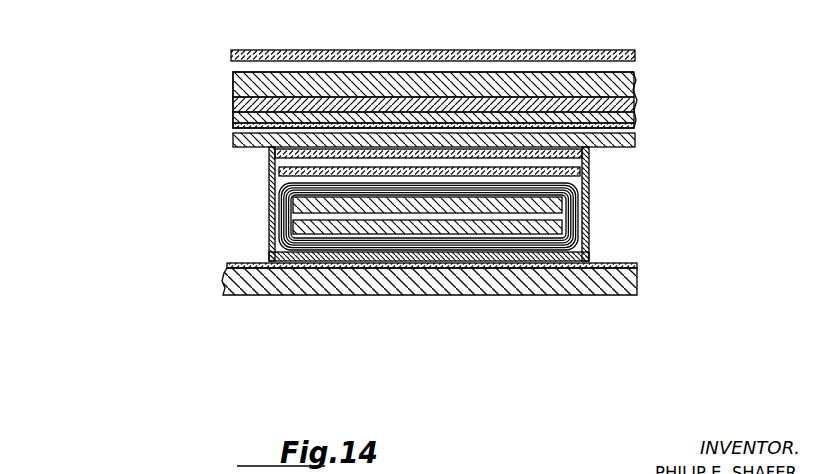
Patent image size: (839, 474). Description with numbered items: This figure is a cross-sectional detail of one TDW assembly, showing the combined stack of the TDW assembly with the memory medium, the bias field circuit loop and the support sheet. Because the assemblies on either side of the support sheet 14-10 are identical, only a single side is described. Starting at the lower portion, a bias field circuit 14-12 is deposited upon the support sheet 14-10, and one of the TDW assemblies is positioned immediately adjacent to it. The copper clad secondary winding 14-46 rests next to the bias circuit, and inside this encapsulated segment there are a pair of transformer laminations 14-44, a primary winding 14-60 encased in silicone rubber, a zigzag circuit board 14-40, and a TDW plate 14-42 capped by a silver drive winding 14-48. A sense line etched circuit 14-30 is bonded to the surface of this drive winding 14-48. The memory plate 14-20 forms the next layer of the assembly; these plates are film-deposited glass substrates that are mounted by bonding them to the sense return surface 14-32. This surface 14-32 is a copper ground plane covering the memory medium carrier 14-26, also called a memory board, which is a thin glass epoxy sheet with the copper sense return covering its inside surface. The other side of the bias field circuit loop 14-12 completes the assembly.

The support sheet 14-10 is at (428, 296).
The bias field circuit 14-12 is at (277, 50).
The memory plate 14-20 is at (433, 69).
The memory medium carrier 14-26 is at (499, 67).
The sense line etched circuit 14-30 is at (232, 138).
The sense return surface 14-32 is at (232, 104).
The zigzag circuit board 14-40 is at (580, 172).
The TDW plate 14-42 is at (430, 249).
The transformer laminations 14-44 is at (553, 228).
The copper clad secondary winding 14-46 is at (517, 252).
The silver drive winding 14-48 is at (583, 149).
The primary winding 14-60 is at (286, 214).